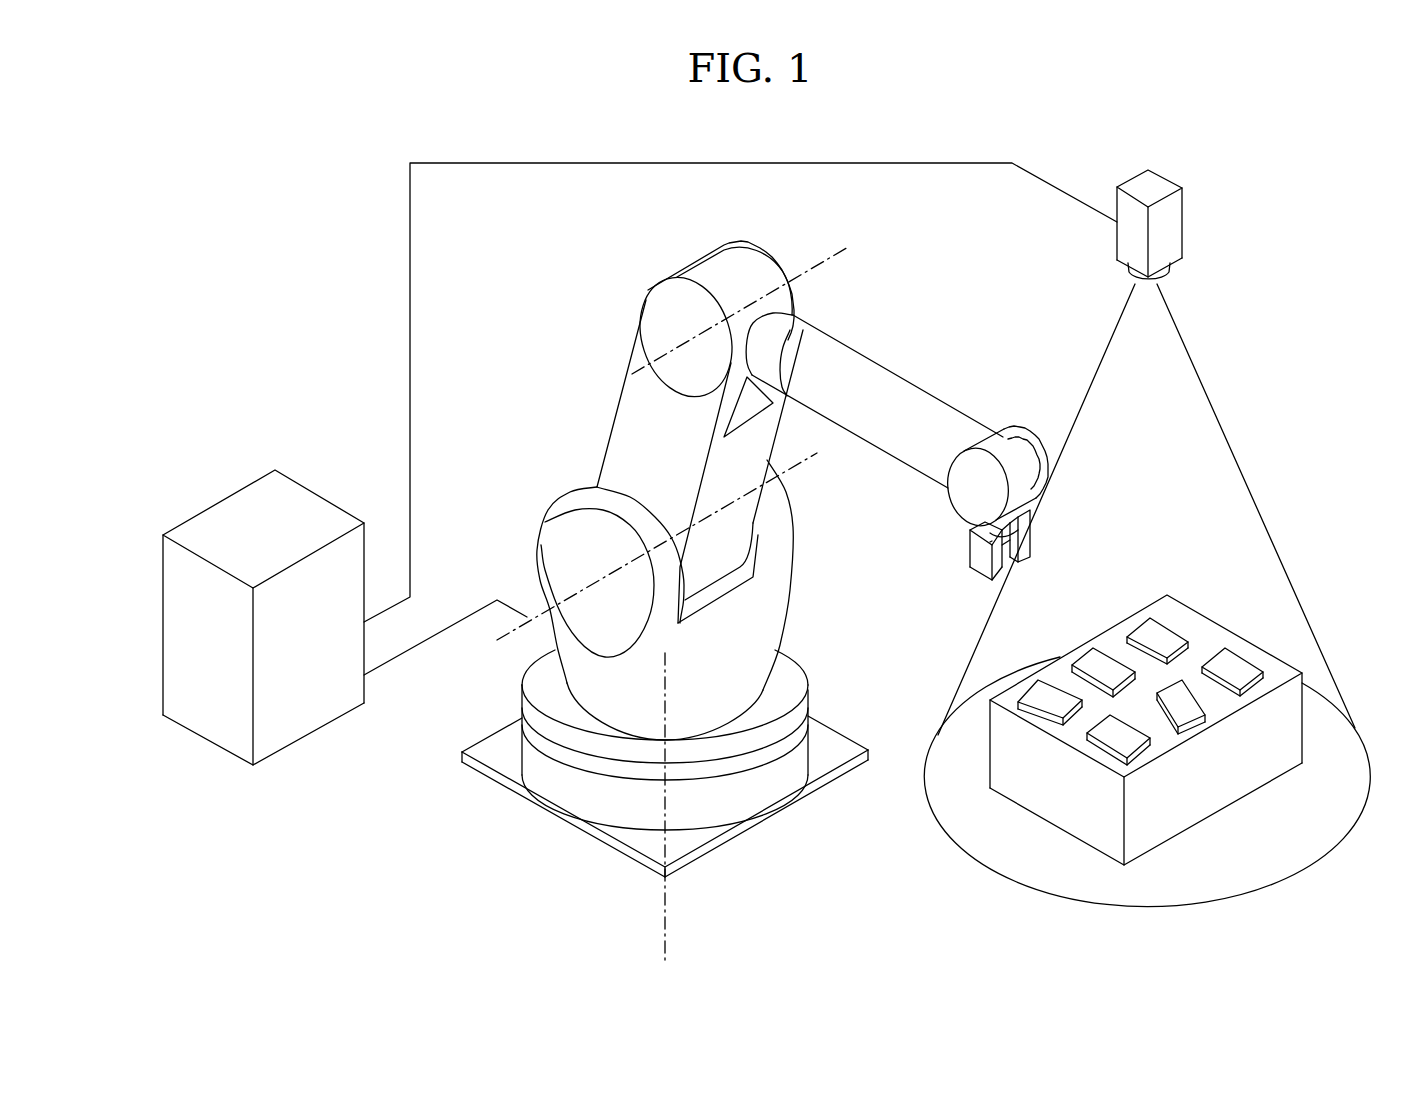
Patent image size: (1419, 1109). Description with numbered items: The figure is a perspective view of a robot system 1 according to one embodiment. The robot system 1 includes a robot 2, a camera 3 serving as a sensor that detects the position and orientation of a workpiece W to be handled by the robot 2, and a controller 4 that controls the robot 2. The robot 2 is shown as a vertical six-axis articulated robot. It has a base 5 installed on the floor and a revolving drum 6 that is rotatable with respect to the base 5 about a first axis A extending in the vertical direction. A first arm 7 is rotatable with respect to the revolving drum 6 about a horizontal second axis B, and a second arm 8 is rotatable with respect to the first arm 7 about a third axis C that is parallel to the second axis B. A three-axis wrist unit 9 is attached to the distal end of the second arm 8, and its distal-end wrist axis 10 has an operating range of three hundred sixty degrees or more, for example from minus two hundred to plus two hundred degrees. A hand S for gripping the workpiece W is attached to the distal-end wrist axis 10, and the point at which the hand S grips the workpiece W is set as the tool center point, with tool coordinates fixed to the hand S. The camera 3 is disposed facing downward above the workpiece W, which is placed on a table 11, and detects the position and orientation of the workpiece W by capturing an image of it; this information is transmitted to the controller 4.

The robot system 1 is at (1072, 137).
The robot 2 is at (526, 331).
The camera 3 is at (1172, 170).
The controller 4 is at (212, 492).
The base 5 is at (647, 842).
The revolving drum 6 is at (735, 643).
The first arm 7 is at (640, 428).
The second arm 8 is at (790, 335).
The wrist unit 9 is at (953, 402).
The distal-end wrist axis 10 is at (1033, 540).
The table 11 is at (1092, 818).
The first axis A is at (668, 930).
The second axis B is at (500, 632).
The third axis C is at (643, 364).
The hand S is at (970, 565).
The workpiece W is at (1163, 637).